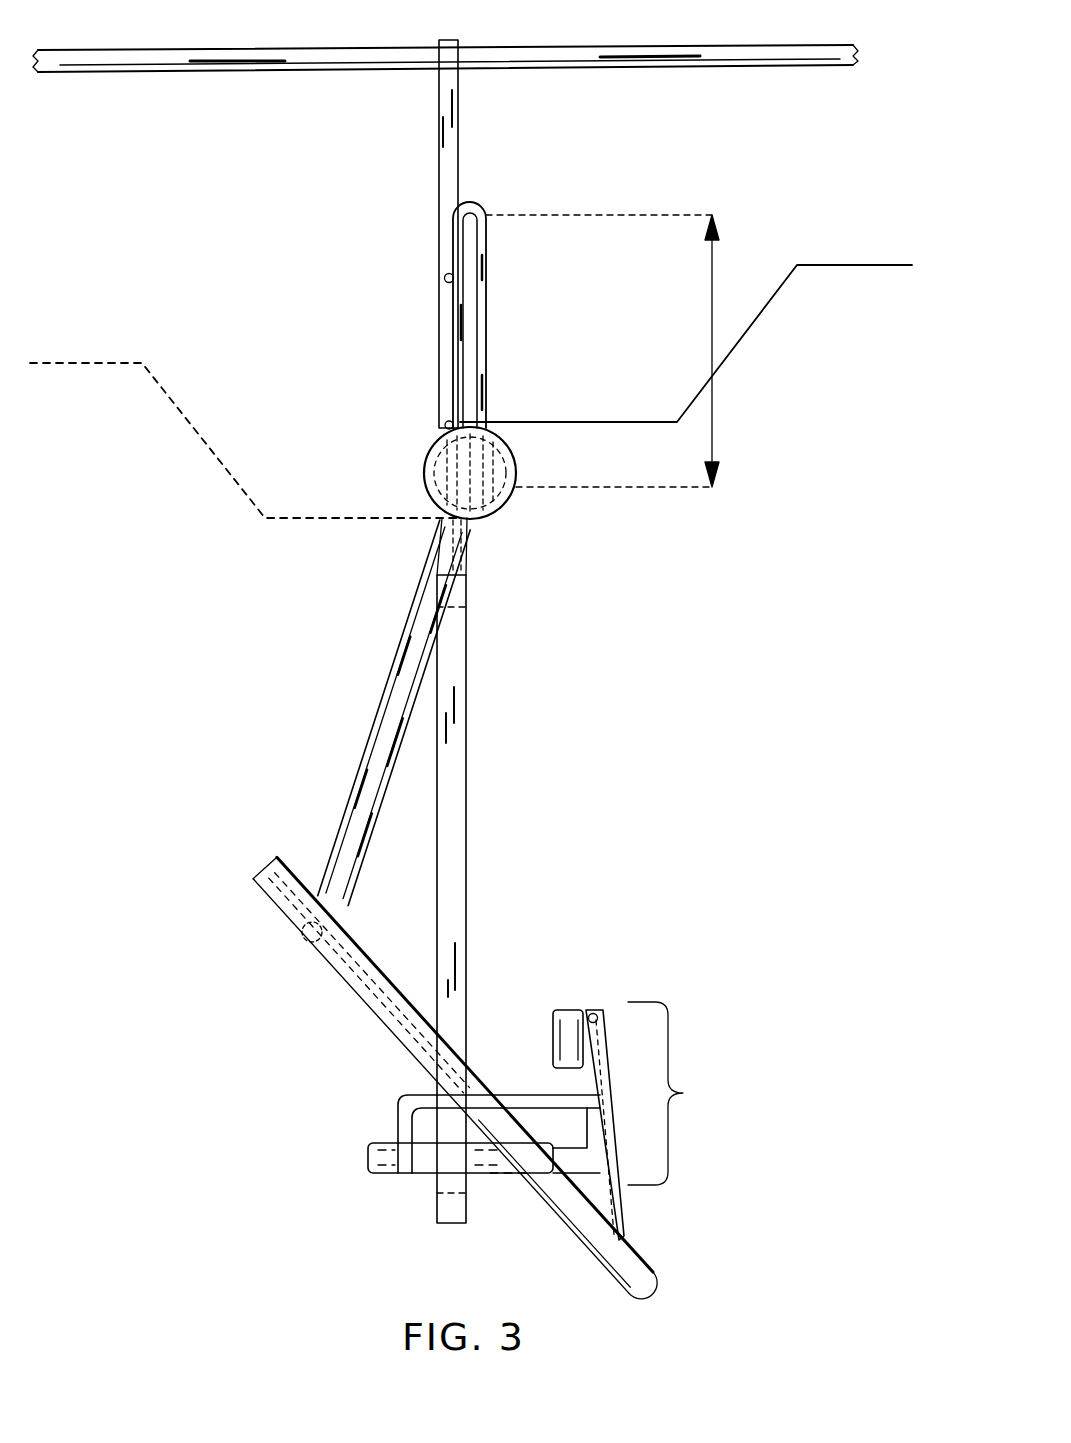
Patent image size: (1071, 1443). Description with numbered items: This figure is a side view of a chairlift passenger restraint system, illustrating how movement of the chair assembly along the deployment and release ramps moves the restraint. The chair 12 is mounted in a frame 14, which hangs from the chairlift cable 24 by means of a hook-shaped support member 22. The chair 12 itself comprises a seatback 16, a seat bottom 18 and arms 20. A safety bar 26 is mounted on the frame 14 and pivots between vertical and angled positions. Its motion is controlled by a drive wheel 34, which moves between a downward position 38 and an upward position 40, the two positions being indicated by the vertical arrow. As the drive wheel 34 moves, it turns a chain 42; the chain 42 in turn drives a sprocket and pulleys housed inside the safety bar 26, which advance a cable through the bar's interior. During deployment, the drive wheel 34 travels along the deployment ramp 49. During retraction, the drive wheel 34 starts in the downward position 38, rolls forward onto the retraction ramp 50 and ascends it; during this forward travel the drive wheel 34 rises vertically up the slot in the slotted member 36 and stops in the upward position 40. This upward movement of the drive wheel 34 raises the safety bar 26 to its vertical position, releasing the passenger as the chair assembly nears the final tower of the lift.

The chair 12 is at (683, 1093).
The frame 14 is at (452, 808).
The seatback 16 is at (567, 1030).
The seat bottom 18 is at (483, 1160).
The arms 20 is at (400, 1133).
The hook-shaped support member 22 is at (447, 165).
The cable 24 is at (590, 53).
The safety bar 26 is at (357, 975).
The drive wheel 34 is at (441, 468).
The slotted member 36 is at (480, 343).
The downward position 38 is at (639, 483).
The upward position 40 is at (624, 332).
The chain 42 is at (397, 652).
The deployment ramp 49 is at (738, 345).
The retraction ramp 50 is at (205, 440).